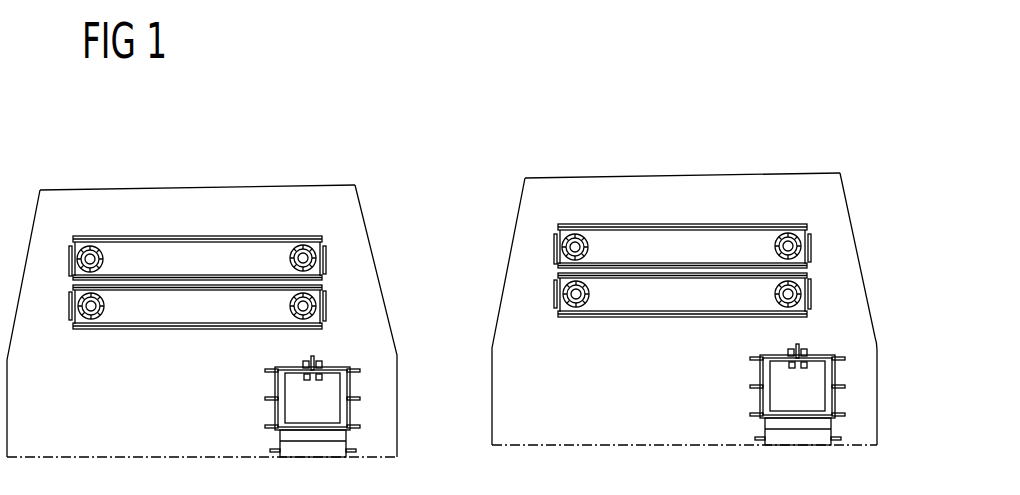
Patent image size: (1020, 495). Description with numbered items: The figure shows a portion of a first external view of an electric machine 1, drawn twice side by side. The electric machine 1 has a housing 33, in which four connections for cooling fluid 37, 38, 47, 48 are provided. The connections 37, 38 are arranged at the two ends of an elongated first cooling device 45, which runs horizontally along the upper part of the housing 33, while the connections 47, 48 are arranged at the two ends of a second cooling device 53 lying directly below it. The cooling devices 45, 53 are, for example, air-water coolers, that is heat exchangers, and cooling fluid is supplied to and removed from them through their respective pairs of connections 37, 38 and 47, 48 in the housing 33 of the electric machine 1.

The electric machine 1 is at (415, 198).
The housing 33 is at (375, 345).
The connection for cooling fluid 37 is at (91, 257).
The connection for cooling fluid 38 is at (303, 256).
The first cooling device 45 is at (183, 258).
The connection for cooling fluid 47 is at (93, 322).
The connection for cooling fluid 48 is at (327, 306).
The second cooling device 53 is at (187, 312).